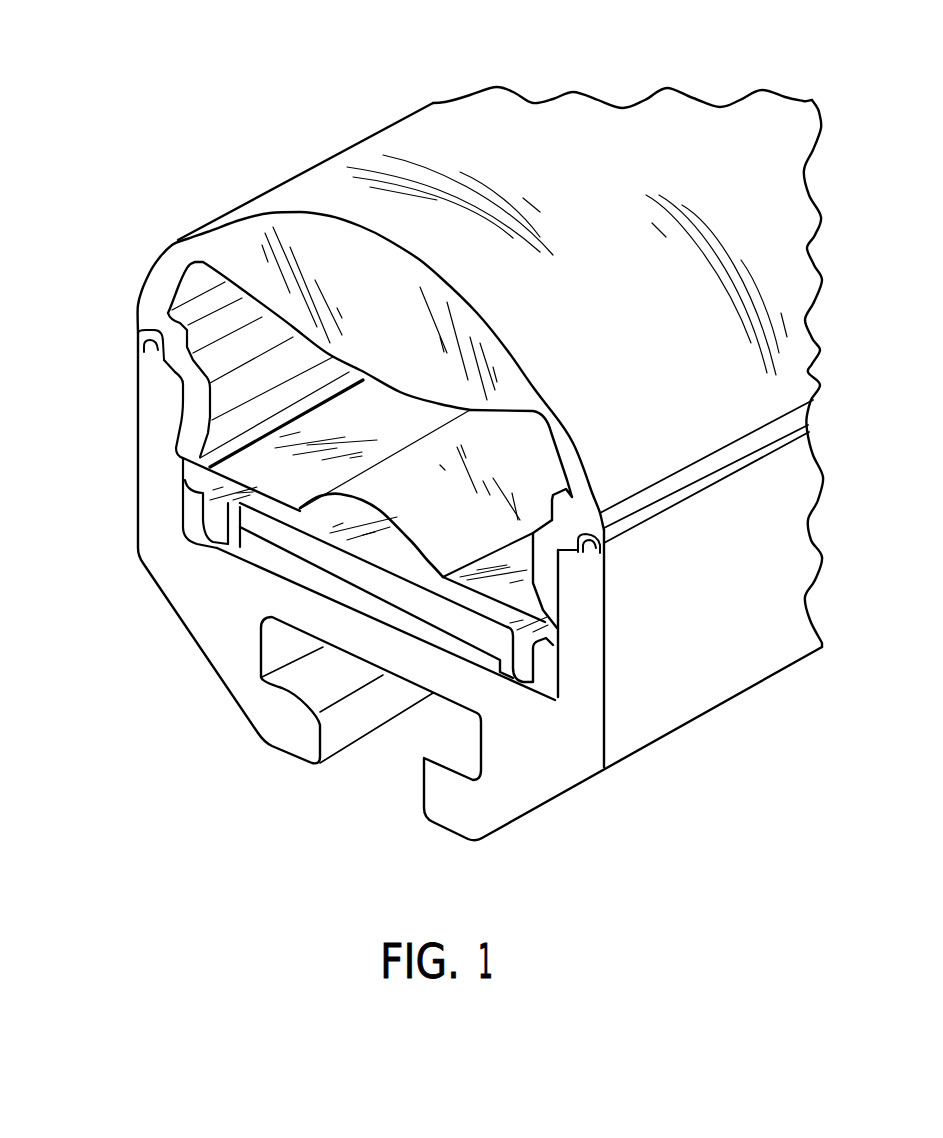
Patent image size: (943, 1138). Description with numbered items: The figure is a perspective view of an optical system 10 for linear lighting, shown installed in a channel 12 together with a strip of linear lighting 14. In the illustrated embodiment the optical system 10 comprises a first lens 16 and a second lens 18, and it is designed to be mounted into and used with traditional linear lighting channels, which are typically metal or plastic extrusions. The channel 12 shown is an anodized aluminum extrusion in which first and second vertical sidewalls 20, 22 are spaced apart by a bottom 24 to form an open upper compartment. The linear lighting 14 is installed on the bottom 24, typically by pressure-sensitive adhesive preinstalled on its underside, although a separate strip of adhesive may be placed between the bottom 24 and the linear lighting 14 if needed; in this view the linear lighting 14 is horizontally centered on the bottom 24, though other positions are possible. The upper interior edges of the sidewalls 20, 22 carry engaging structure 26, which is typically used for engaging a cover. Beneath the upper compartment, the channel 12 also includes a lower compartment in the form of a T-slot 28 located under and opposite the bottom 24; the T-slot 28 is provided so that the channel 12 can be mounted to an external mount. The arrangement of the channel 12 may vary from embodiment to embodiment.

The optical system 10 is at (266, 170).
The channel 12 is at (130, 508).
The strip of linear lighting 14 is at (329, 568).
The first lens 16 is at (443, 515).
The second lens 18 is at (510, 110).
The first vertical sidewall 20 is at (157, 406).
The second vertical sidewall 22 is at (590, 633).
The bottom 24 is at (557, 680).
The engaging structure 26 is at (163, 358).
The T-slot 28 is at (392, 762).